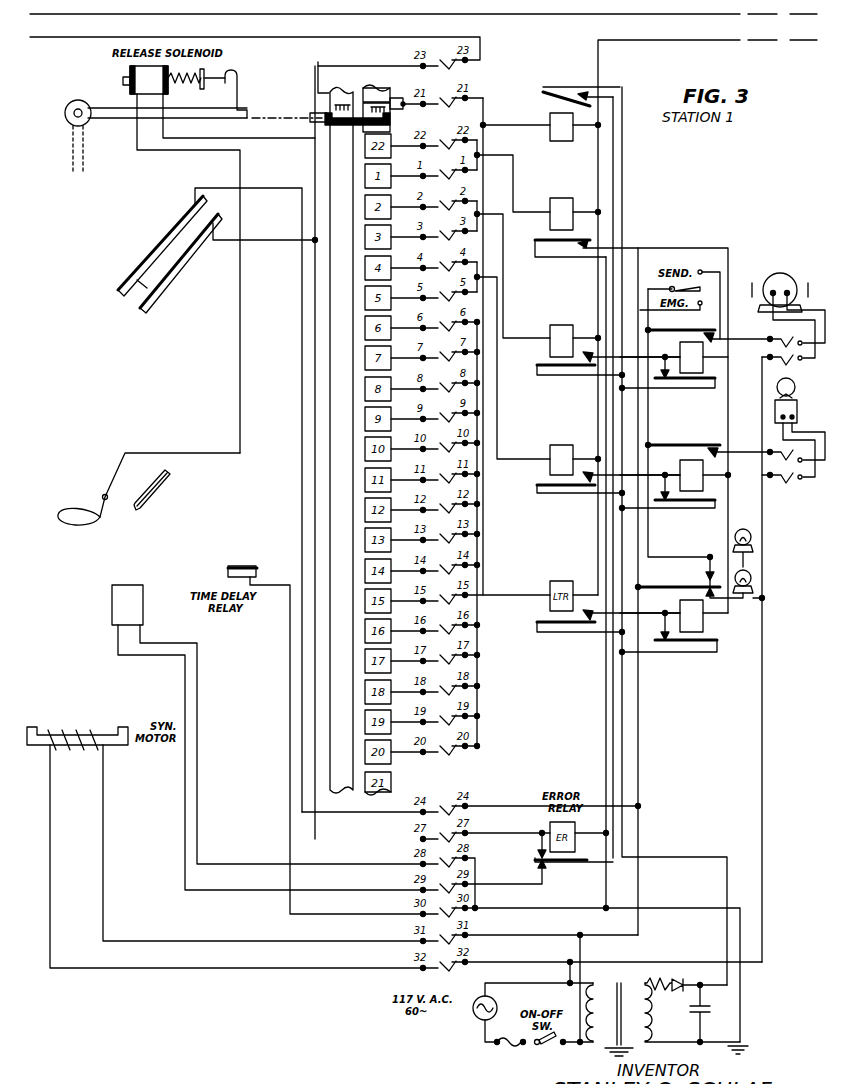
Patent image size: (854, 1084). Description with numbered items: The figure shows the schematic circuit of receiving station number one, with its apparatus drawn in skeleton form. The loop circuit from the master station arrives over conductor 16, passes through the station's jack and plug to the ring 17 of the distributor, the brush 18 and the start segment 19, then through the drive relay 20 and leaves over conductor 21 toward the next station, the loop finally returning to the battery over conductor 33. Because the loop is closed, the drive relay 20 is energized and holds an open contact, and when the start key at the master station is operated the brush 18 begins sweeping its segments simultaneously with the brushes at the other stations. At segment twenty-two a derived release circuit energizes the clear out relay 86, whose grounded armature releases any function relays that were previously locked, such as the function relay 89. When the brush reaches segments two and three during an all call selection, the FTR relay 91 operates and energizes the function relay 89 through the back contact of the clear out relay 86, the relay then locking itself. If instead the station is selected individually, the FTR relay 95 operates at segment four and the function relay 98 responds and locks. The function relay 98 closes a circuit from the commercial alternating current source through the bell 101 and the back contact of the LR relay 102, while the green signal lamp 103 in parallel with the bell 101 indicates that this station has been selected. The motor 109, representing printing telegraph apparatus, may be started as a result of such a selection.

The conductor 16 is at (243, 37).
The conductor 33 is at (394, 22).
The conductor 21 is at (650, 40).
The ring of the distributor 17 is at (327, 98).
The brush 18 is at (341, 440).
The start segment 19 is at (390, 122).
The drive relay 20 is at (557, 140).
The clear out relay 86 is at (553, 196).
The FTR relay 91 is at (548, 346).
The FTR relay 95 is at (548, 466).
The function relay 89 is at (697, 375).
The function relay 98 is at (697, 492).
The bell 101 is at (775, 408).
The LR relay 102 is at (697, 645).
The green signal lamp 103 is at (750, 533).
The motor 109 is at (790, 275).